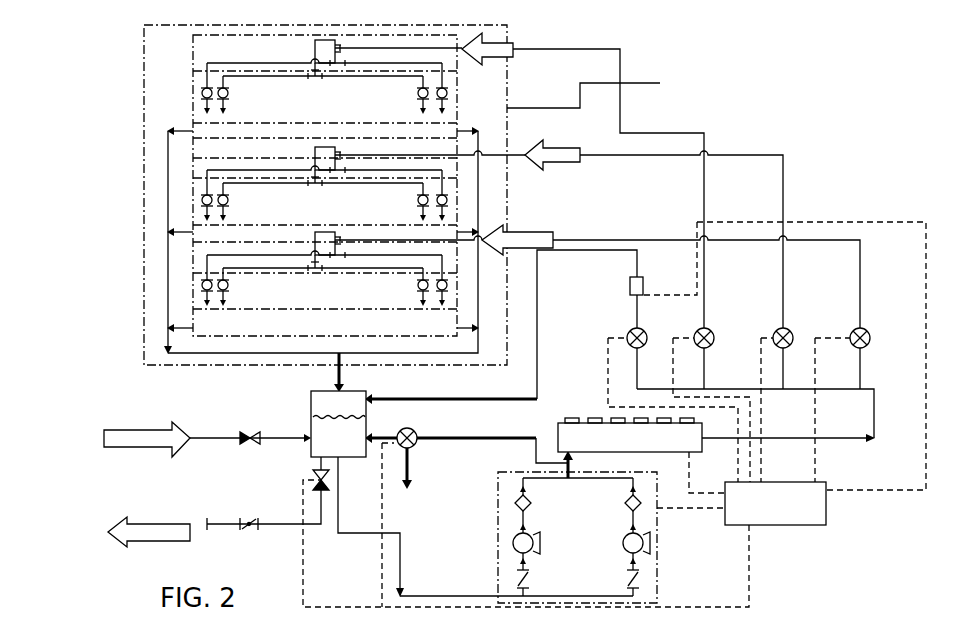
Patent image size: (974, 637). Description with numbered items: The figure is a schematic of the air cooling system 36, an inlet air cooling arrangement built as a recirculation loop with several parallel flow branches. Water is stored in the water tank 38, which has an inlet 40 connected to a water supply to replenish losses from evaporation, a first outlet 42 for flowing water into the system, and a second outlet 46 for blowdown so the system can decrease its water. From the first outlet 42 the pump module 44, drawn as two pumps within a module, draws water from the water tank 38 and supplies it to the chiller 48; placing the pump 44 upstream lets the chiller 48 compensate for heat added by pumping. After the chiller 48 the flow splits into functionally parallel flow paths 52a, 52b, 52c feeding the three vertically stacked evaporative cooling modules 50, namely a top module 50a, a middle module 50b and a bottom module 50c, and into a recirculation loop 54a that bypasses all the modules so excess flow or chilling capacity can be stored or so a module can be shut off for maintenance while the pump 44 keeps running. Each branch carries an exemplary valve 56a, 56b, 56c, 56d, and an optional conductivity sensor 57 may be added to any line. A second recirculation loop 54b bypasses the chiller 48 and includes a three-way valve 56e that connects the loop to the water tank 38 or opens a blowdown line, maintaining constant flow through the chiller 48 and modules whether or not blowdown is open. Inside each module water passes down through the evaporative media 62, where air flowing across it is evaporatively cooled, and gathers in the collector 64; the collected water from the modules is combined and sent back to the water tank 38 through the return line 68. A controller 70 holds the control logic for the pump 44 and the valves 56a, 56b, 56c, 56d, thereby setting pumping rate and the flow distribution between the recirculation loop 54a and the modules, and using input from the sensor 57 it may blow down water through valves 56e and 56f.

The air cooling system 36 is at (680, 62).
The water tank 38 is at (311, 400).
The inlet 40 is at (277, 435).
The first outlet 42 is at (340, 514).
The pump module 44 is at (657, 530).
The second outlet 46 is at (409, 470).
The chiller 48 is at (668, 454).
The evaporative cooling module 50 is at (130, 369).
The top module 50a is at (193, 80).
The middle module 50b is at (193, 192).
The bottom module 50c is at (193, 287).
The functionally parallel flow path 52a is at (862, 272).
The functionally parallel flow path 52b is at (785, 272).
The functionally parallel flow path 52c is at (706, 272).
The recirculation loop 54a is at (537, 300).
The recirculation loop 54b is at (478, 437).
The valve 56a is at (870, 336).
The valve 56b is at (793, 332).
The valve 56c is at (713, 332).
The valve 56d is at (646, 332).
The three-way valve 56e is at (414, 430).
The valve 56f is at (323, 491).
The conductivity sensor 57 is at (643, 288).
The evaporative media 62 is at (343, 114).
The collector 64 is at (296, 132).
The return line 68 is at (345, 373).
The controller 70 is at (774, 526).